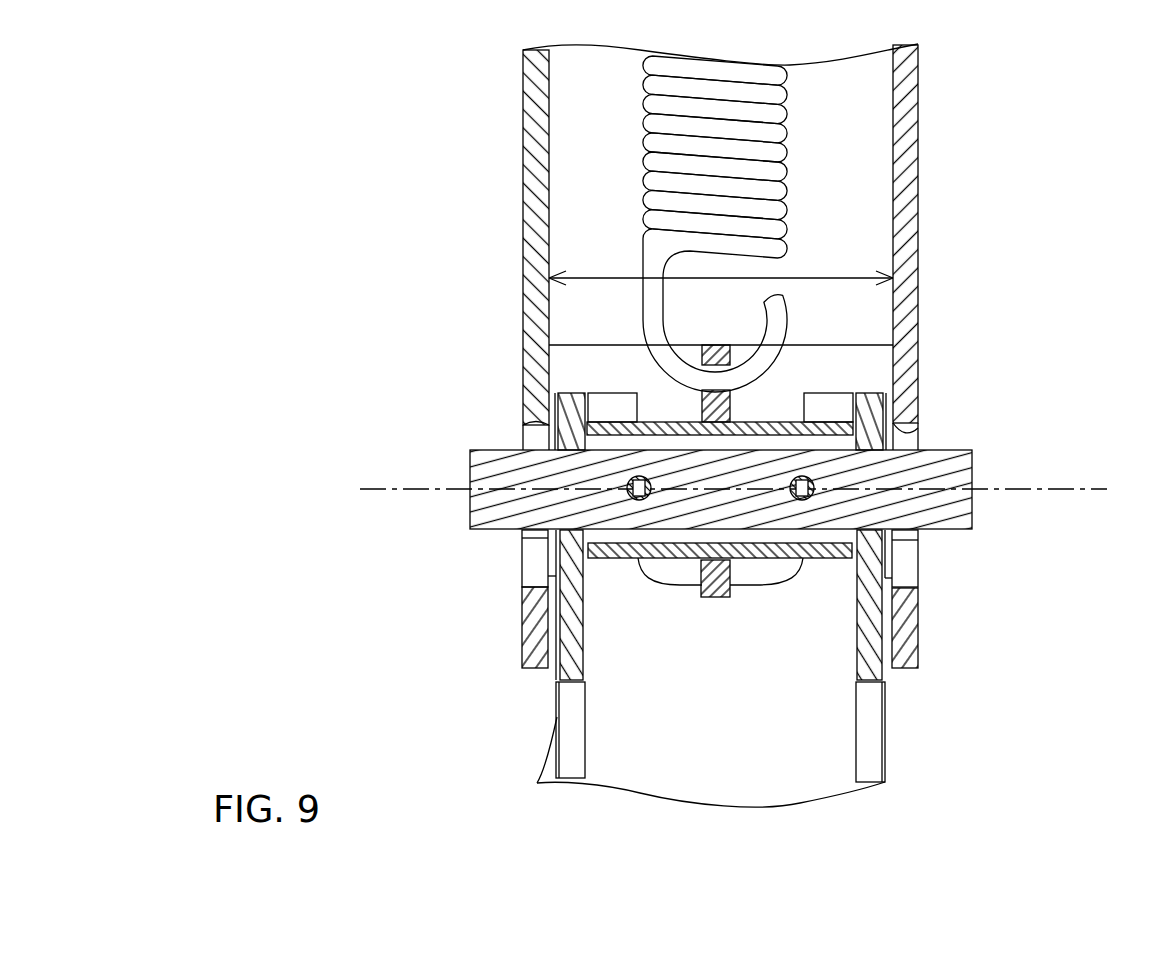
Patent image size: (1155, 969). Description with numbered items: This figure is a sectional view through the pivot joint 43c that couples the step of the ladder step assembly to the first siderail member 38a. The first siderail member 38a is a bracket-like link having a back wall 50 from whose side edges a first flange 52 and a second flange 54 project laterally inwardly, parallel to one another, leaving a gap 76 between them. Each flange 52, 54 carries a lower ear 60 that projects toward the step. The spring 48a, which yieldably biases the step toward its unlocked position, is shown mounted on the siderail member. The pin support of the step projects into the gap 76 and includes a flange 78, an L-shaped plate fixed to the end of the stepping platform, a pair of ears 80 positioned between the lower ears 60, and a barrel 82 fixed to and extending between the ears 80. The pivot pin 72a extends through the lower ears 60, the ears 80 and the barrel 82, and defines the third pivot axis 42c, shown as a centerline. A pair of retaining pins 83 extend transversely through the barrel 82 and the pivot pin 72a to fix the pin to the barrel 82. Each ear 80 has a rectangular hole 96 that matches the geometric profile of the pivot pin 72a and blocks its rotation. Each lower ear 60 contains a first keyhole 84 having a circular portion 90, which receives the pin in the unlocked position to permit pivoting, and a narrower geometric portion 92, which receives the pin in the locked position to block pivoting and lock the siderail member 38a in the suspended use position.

The first siderail member 38a is at (925, 115).
The third pivot axis 42c is at (1092, 489).
The pivot joint 43c is at (970, 409).
The spring 48a is at (782, 167).
The back wall 50 is at (860, 148).
The first flange 52 is at (918, 191).
The second flange 54 is at (523, 243).
The lower ear 60 is at (522, 640).
The pivot pin 72a is at (973, 455).
The gap 76 is at (833, 278).
The flange 78 is at (618, 752).
The ears 80 is at (585, 663).
The barrel 82 is at (617, 560).
The retaining pin 83 is at (643, 500).
The first keyhole 84 is at (518, 425).
The circular portion 90 is at (523, 442).
The geometric portion 92 is at (522, 575).
The hole 96 is at (592, 450).